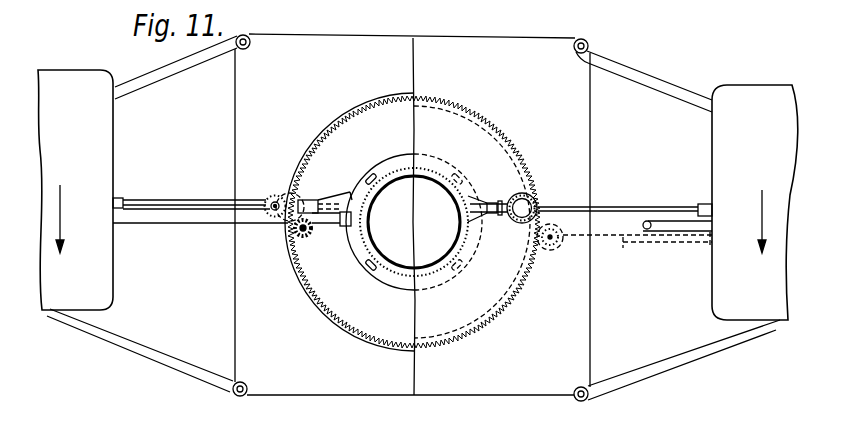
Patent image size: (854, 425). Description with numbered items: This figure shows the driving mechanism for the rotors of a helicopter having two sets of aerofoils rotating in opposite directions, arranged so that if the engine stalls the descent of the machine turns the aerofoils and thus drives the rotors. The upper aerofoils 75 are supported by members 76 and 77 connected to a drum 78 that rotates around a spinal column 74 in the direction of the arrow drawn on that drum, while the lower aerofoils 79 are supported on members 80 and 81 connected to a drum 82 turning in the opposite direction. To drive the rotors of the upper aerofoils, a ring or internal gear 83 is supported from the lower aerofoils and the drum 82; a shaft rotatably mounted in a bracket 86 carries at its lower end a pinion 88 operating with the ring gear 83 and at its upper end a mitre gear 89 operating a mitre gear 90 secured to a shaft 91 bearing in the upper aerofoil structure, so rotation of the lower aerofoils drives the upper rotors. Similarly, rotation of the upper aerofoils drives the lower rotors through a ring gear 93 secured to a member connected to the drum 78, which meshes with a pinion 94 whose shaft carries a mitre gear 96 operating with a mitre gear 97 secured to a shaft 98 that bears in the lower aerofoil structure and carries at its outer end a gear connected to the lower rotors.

The spinal column 74 is at (368, 232).
The upper aerofoils 75 is at (755, 202).
The member 76 is at (684, 233).
The member 77 is at (677, 354).
The drum 78 is at (468, 254).
The lower aerofoils 79 is at (75, 190).
The member 80 is at (171, 222).
The member 81 is at (136, 345).
The drum 82 is at (356, 250).
The ring gear 83 is at (298, 278).
The bracket 86 is at (484, 220).
The pinion 88 is at (305, 236).
The mitre gear 89 is at (537, 194).
The mitre gear 90 is at (500, 199).
The shaft 91 is at (630, 207).
The ring gear 93 is at (513, 156).
The pinion 94 is at (556, 251).
The mitre gear 96 is at (272, 196).
The mitre gear 97 is at (299, 193).
The shaft 98 is at (187, 202).